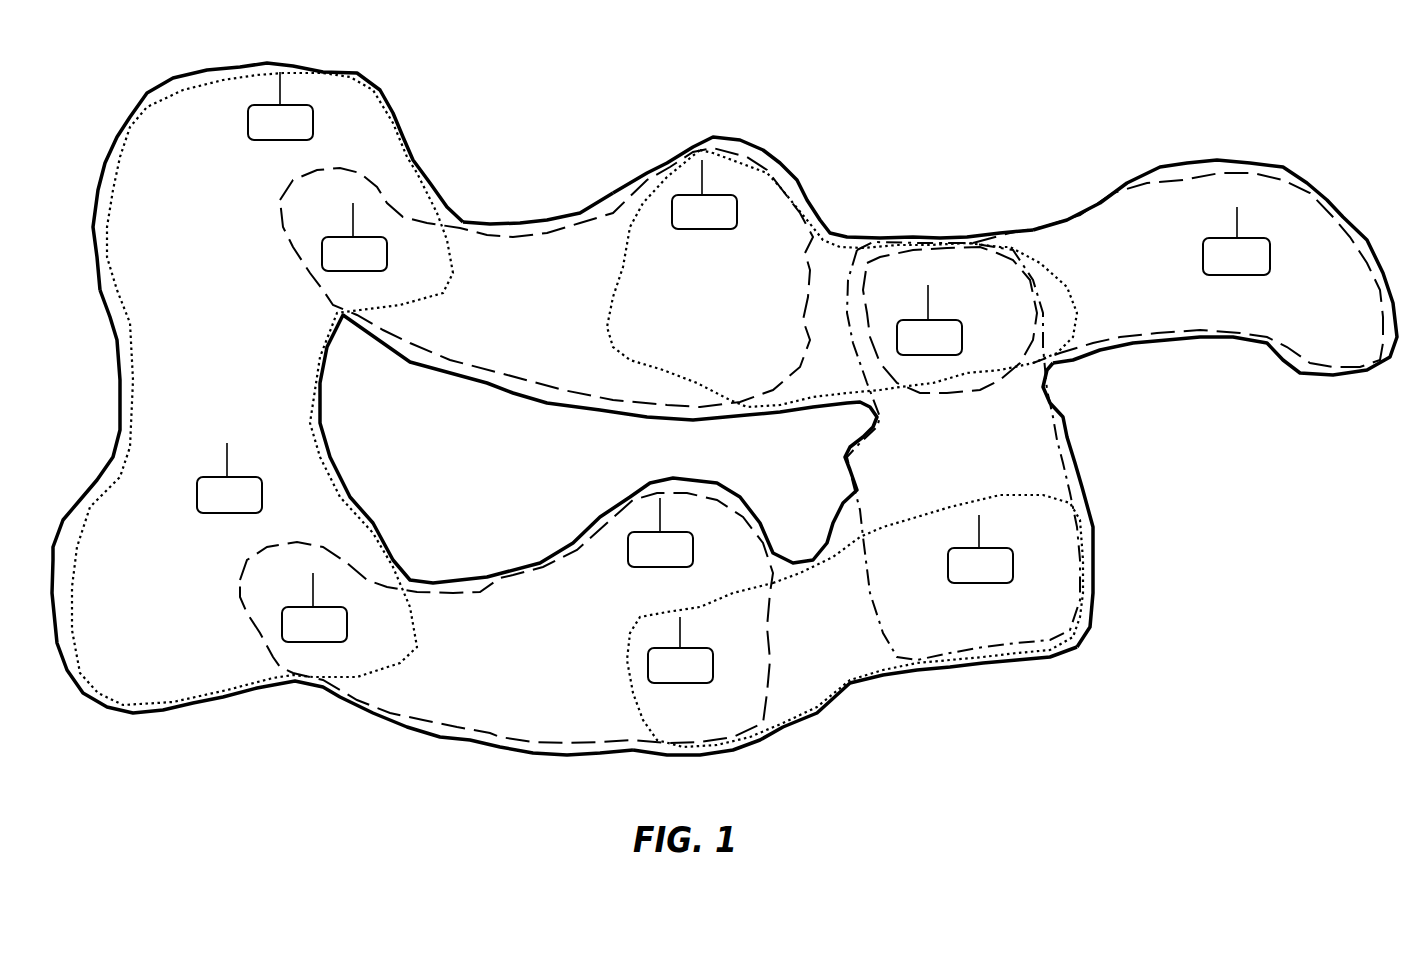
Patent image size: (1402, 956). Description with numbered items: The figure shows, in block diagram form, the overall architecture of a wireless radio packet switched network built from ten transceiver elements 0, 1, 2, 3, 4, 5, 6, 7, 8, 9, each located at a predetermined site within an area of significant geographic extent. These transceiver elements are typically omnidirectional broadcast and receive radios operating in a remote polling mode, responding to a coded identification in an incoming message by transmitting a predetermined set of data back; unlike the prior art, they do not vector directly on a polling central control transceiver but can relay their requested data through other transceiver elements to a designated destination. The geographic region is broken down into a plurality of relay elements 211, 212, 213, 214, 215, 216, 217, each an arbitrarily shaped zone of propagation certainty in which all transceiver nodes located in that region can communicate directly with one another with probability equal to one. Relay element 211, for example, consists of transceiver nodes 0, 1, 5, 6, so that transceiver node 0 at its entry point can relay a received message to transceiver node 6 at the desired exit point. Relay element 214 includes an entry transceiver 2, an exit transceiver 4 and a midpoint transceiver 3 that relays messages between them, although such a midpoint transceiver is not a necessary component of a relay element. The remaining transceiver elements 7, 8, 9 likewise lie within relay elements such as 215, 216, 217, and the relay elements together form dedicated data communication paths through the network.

The transceiver element 0 is at (313, 122).
The transceiver element 1 is at (387, 255).
The transceiver element 2 is at (737, 212).
The transceiver element 3 is at (962, 327).
The transceiver element 4 is at (1203, 263).
The transceiver element 5 is at (262, 500).
The transceiver element 6 is at (347, 625).
The transceiver element 7 is at (693, 550).
The transceiver element 8 is at (706, 683).
The transceiver element 9 is at (957, 583).
The relay element 211 is at (413, 160).
The relay element 212 is at (553, 225).
The relay element 213 is at (830, 237).
The relay element 214 is at (1148, 183).
The relay element 215 is at (490, 588).
The relay element 216 is at (862, 687).
The relay element 217 is at (1070, 437).